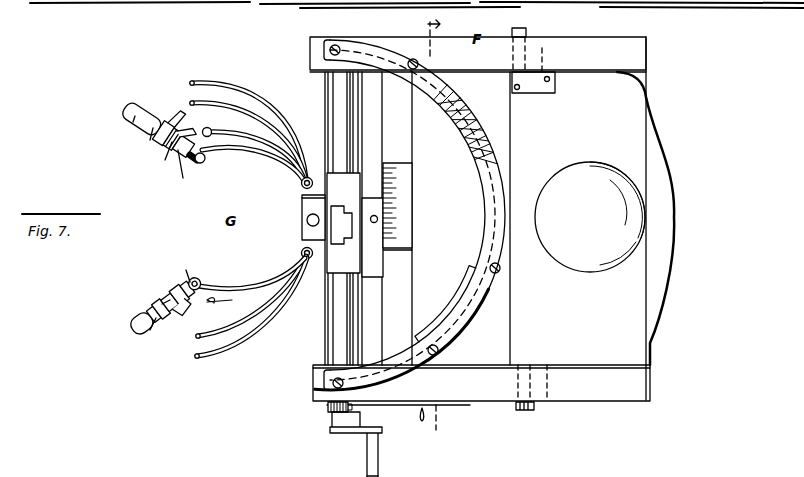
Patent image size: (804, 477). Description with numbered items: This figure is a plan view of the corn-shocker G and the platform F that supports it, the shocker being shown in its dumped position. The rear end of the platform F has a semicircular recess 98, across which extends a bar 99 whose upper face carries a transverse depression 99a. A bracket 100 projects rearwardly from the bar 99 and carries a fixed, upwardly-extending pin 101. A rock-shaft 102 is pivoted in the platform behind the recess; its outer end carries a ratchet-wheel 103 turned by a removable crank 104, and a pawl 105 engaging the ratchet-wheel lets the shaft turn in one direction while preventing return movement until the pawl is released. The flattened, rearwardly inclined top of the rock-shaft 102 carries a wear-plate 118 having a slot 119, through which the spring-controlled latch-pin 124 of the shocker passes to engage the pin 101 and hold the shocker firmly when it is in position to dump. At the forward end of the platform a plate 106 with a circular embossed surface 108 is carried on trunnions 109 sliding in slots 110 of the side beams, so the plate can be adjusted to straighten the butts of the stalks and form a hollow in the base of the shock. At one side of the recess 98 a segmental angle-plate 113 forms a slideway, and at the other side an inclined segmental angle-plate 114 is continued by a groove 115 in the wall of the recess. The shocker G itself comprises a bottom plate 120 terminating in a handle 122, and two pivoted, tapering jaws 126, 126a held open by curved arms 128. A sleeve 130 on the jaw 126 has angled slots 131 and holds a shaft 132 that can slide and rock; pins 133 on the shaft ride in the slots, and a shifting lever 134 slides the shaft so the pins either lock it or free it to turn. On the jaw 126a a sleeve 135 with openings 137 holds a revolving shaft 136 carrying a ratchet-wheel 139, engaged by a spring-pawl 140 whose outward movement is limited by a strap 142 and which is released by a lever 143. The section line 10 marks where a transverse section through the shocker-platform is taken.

The recess 98 is at (492, 186).
The bar 99 is at (410, 283).
The transverse depression 99a is at (410, 243).
The bracket 100 is at (380, 206).
The pin 101 is at (373, 222).
The rock-shaft 102 is at (330, 88).
The ratchet-wheel 103 is at (328, 410).
The crank 104 is at (380, 466).
The pawl 105 is at (410, 383).
The plate 106 is at (592, 218).
The embossed surface 108 is at (590, 217).
The trunnions 109 is at (522, 33).
The slots 110 is at (548, 50).
The segmental angle-plate 113 is at (464, 330).
The second angle-plate 114 is at (375, 227).
The groove 115 is at (472, 148).
The wear-plate 118 is at (332, 205).
The slot 119 is at (386, 44).
The bottom plate 120 is at (316, 227).
The handle 122 is at (316, 203).
The spring-controlled latch-pin 124 is at (302, 207).
The jaw 126 is at (258, 292).
The jaw 126a is at (278, 152).
The curved arms 128 is at (268, 110).
The sleeve 130 is at (184, 287).
The angled slot 131 is at (329, 473).
The shaft 132 is at (203, 282).
The pins 133 is at (156, 331).
The shifting lever 134 is at (145, 138).
The sleeve 135 is at (127, 129).
The shaft 136 is at (202, 162).
The openings 137 is at (180, 320).
The ratchet-wheel 139 is at (161, 156).
The spring-pawl 140 is at (205, 125).
The strap 142 is at (182, 170).
The lever 143 is at (165, 97).
The section line 10 is at (455, 380).